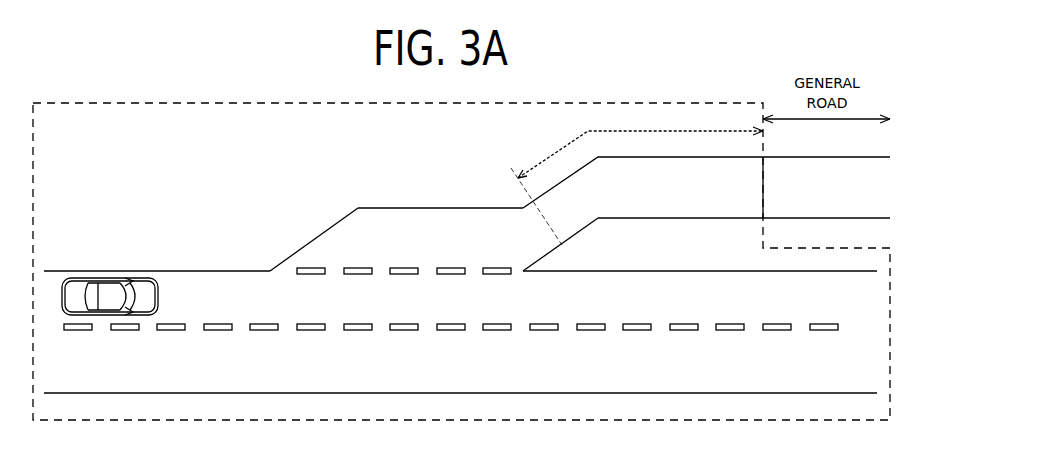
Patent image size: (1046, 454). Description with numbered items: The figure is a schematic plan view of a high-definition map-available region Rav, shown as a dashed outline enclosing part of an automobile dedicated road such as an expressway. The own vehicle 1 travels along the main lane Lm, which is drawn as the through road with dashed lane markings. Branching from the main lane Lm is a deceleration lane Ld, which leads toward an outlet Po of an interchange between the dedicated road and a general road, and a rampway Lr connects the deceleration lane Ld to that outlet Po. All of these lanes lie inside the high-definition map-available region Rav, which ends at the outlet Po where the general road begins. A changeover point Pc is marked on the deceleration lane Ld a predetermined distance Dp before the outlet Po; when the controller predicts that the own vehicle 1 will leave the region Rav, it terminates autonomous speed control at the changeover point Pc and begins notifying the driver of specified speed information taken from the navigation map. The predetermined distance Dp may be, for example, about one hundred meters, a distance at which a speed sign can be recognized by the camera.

The high-definition map-available region Rav is at (157, 103).
The own vehicle 1 is at (110, 279).
The main lane Lm is at (198, 270).
The deceleration lane Ld is at (455, 208).
The changeover point Pc is at (514, 172).
The predetermined distance Dp is at (640, 144).
The outlet Po is at (765, 187).
The rampway Lr is at (670, 219).